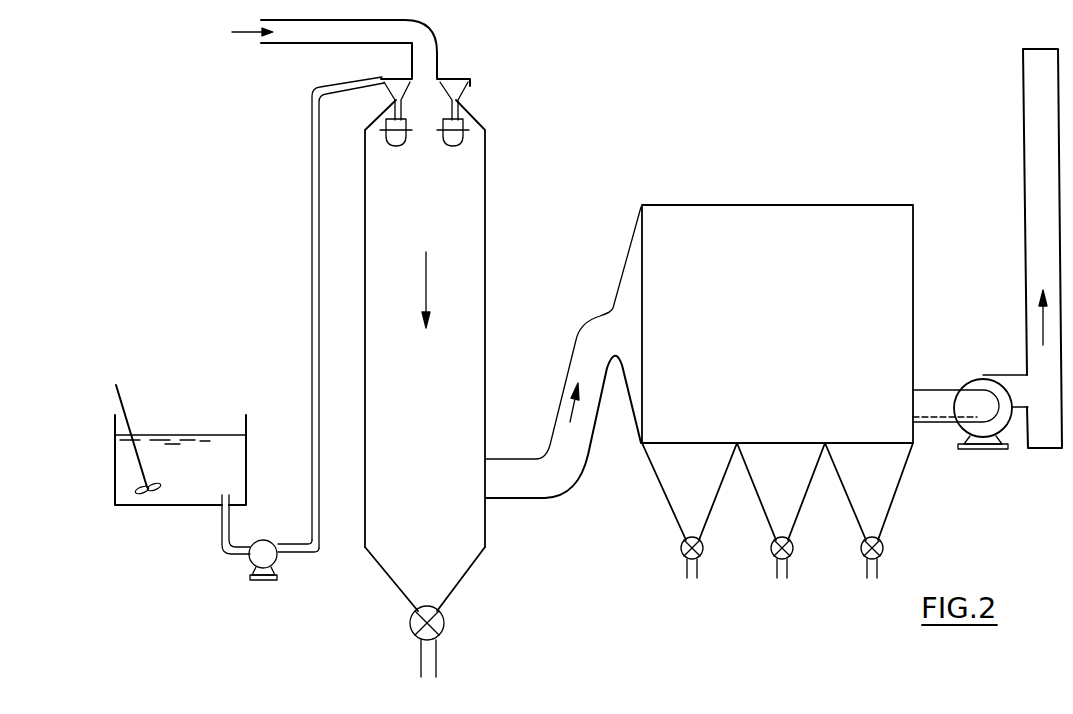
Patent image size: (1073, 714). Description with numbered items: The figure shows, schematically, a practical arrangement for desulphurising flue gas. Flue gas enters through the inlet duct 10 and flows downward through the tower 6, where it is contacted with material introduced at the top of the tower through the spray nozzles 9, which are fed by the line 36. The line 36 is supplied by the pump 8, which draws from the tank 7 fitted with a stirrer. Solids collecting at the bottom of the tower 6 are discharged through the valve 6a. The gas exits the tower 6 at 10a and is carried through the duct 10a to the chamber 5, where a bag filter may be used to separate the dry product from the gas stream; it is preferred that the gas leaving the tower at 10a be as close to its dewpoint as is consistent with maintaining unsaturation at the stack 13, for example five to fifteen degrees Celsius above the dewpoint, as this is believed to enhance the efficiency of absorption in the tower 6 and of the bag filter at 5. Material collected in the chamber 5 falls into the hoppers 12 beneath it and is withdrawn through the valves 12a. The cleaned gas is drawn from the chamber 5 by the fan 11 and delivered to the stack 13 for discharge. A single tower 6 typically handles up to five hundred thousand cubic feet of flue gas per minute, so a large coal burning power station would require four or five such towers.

The bag filter 5 is at (772, 328).
The tower 6 is at (486, 276).
The discharge valve of tower 6a is at (441, 622).
The slurry tank with stirrer 7 is at (247, 422).
The pump 8 is at (277, 560).
The spray nozzles 9 is at (384, 131).
The flue gas inlet duct 10 is at (331, 42).
The tower gas exit 10a is at (500, 496).
The fan / blower 11 is at (978, 378).
The hopper 12 is at (706, 518).
The hopper discharge valves 12a is at (681, 558).
The stack 13 is at (1024, 213).
The slurry feed pipe 36 is at (312, 281).